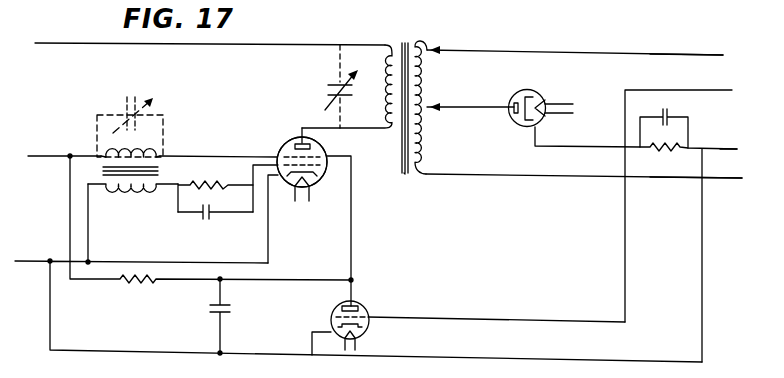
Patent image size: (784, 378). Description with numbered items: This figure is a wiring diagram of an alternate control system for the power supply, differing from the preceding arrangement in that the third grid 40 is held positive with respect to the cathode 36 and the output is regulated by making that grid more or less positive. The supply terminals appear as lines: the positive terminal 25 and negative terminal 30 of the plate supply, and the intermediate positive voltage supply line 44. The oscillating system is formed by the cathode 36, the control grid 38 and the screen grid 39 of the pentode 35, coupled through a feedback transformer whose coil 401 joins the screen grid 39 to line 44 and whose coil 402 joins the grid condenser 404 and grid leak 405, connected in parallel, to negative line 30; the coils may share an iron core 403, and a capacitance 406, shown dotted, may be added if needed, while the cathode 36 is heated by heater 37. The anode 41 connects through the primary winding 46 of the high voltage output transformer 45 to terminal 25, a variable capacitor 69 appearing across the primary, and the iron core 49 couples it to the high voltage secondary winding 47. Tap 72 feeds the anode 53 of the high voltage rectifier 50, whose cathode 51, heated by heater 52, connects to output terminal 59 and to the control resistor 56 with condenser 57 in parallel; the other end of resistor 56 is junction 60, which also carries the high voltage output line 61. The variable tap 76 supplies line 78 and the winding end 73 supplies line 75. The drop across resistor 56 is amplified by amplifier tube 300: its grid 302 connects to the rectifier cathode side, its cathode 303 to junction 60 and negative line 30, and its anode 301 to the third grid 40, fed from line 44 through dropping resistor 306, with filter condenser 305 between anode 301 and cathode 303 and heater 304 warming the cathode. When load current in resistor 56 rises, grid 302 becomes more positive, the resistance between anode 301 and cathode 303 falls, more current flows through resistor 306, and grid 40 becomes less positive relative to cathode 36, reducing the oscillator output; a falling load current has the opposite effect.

The positive terminal 25 is at (43, 42).
The negative terminal 30 is at (18, 261).
The pentode 35 is at (288, 143).
The cathode 36 is at (319, 175).
The heater 37 is at (292, 189).
The control grid 38 is at (323, 165).
The screen grid 39 is at (281, 151).
The third grid 40 is at (322, 155).
The anode 41 is at (300, 143).
The intermediate positive voltage supply line 44 is at (43, 146).
The high voltage output transformer 45 is at (404, 38).
The primary winding 46 is at (372, 44).
The high voltage secondary winding 47 is at (430, 69).
The iron core 49 is at (405, 174).
The high voltage rectifier 50 is at (524, 90).
The cathode 51 is at (531, 96).
The heater 52 is at (541, 99).
The anode 53 is at (513, 118).
The control resistor 56 is at (675, 152).
The condenser 57 is at (672, 115).
The output terminal 59 is at (725, 89).
The junction 60 is at (704, 147).
The high voltage output line 61 is at (733, 149).
The variable capacitor 69 is at (328, 88).
The tap 72 is at (433, 104).
The end of the high voltage secondary winding 73 is at (434, 171).
The line 75 is at (744, 178).
The variable tap 76 is at (430, 47).
The line 78 is at (705, 54).
The amplifier tube 300 is at (359, 304).
The anode 301 is at (340, 304).
The grid 302 is at (336, 317).
The cathode 303 is at (366, 324).
The heater 304 is at (368, 335).
The filter condenser 305 is at (213, 317).
The dropping resistor 306 is at (138, 284).
The coil 401 is at (110, 158).
The coil 402 is at (146, 191).
The iron core 403 is at (168, 167).
The grid condenser 404 is at (200, 217).
The grid leak 405 is at (198, 184).
The capacitance 406 is at (136, 100).